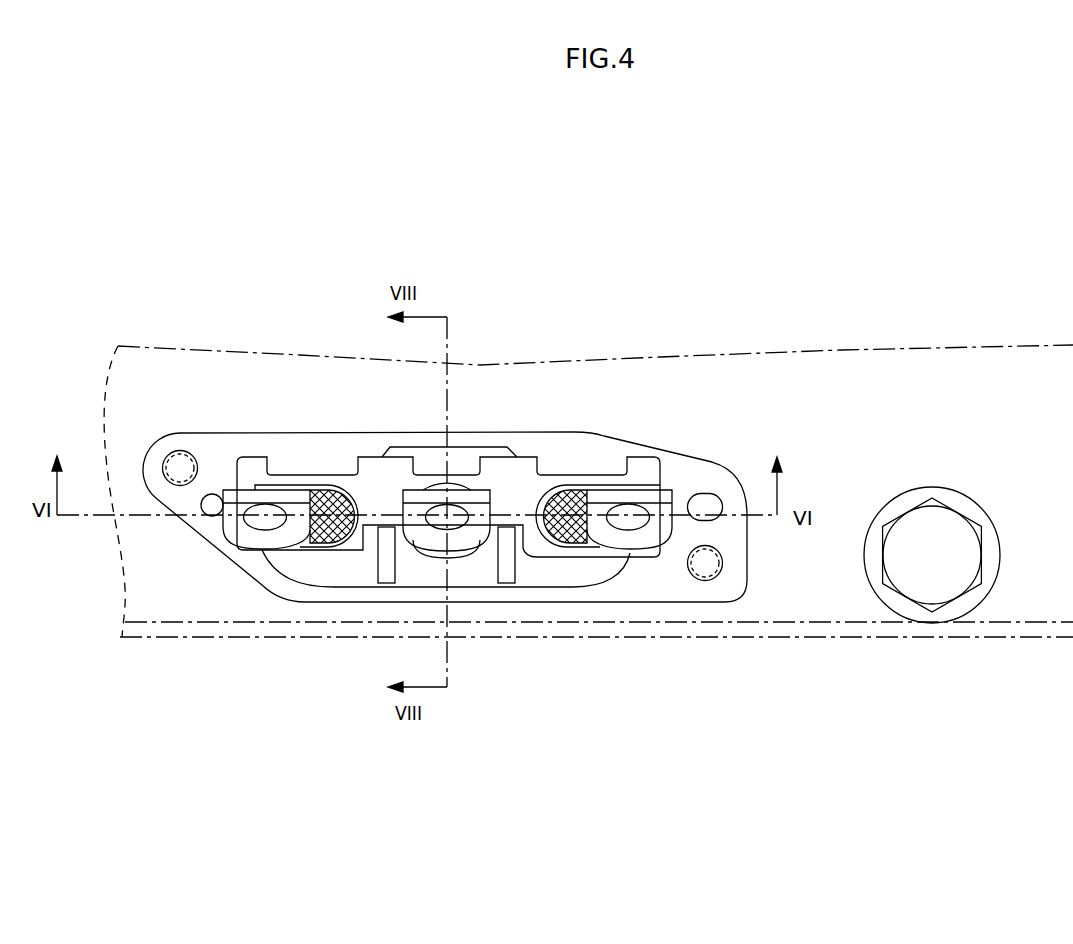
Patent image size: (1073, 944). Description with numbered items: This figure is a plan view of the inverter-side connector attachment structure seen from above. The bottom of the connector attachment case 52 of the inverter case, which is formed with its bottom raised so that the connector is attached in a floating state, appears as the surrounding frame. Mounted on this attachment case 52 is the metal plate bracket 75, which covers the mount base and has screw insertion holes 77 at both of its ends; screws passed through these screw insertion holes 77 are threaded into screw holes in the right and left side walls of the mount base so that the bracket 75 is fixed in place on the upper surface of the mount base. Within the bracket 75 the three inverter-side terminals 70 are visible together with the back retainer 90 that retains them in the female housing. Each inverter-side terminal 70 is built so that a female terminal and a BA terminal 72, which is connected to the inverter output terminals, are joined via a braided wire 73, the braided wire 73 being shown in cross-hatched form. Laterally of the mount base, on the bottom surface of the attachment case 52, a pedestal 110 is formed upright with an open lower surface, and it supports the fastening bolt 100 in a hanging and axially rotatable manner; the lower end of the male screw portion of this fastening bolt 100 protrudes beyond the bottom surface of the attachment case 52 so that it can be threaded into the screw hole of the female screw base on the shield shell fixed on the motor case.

The connector attachment case 52 is at (565, 637).
The inverter-side terminal 70 is at (604, 497).
The BA terminal 72 is at (245, 497).
The braided wire 73 is at (330, 528).
The bracket 75 is at (333, 432).
The screw insertion hole 77 is at (177, 457).
The back retainer 90 is at (523, 457).
The fastening bolt 100 is at (957, 580).
The pedestal 110 is at (923, 638).